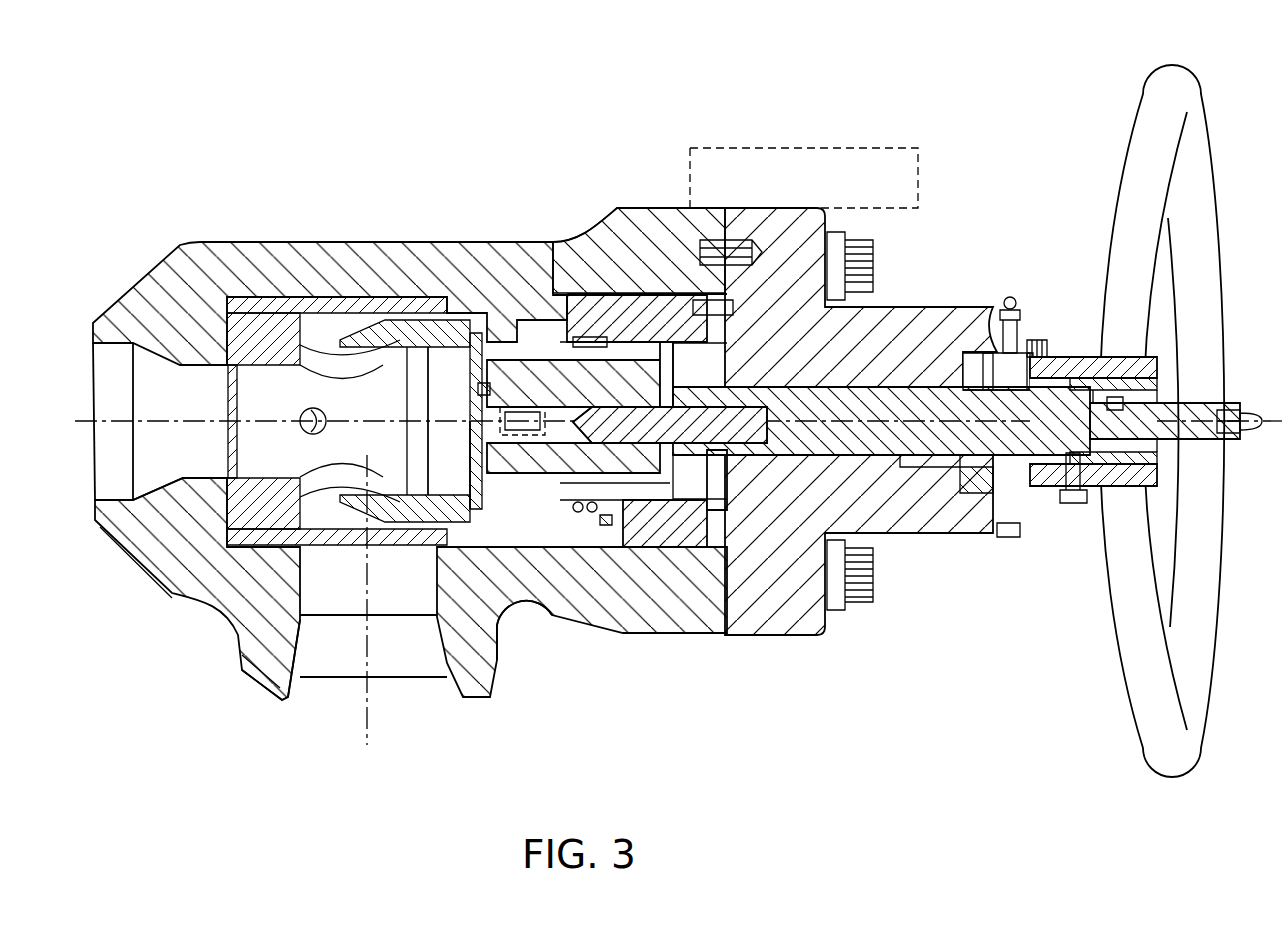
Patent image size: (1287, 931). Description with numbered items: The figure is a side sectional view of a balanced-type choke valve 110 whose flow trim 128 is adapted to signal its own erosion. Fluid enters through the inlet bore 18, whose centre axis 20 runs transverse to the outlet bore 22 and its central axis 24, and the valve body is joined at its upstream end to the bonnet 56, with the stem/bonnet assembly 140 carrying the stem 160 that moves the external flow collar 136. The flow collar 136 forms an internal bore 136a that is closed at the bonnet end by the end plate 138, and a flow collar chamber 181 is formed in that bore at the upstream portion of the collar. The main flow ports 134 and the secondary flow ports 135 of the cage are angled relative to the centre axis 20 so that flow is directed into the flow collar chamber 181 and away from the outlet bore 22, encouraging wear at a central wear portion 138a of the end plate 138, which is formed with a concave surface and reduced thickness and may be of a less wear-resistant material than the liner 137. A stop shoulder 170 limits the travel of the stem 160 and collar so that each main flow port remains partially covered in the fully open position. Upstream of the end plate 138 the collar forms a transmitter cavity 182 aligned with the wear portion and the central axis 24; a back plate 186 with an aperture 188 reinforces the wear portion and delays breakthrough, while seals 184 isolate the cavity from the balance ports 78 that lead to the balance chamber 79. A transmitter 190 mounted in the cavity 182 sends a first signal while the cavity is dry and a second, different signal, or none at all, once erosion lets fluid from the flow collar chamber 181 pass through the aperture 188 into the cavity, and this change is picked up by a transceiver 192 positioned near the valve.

The choke valve 110 is at (150, 252).
The inlet bore 18 is at (303, 637).
The centre axis of the inlet bore 20 is at (367, 663).
The outlet bore 22 is at (203, 478).
The central axis of the outlet bore 24 is at (97, 425).
The bonnet 56 is at (797, 627).
The balance ports 78 is at (530, 370).
The balance chamber 79 is at (704, 380).
The flow trim 128 is at (335, 492).
The main flow ports 134 is at (337, 362).
The secondary flow ports 135 is at (300, 418).
The external flow collar 136 is at (443, 517).
The internal bore 136a is at (393, 457).
The liner 137 is at (390, 337).
The end plate 138 is at (473, 383).
The central wear portion 138a is at (470, 443).
The stem/bonnet assembly 140 is at (903, 274).
The stem 160 is at (873, 440).
The stop shoulder 170 is at (927, 457).
The flow collar chamber 181 is at (492, 670).
The transmitter cavity 182 is at (590, 512).
The seals 184 is at (470, 383).
The back plate 186 is at (573, 507).
The aperture 188 is at (510, 410).
The transmitter 190 is at (603, 528).
The transceiver 192 is at (808, 162).